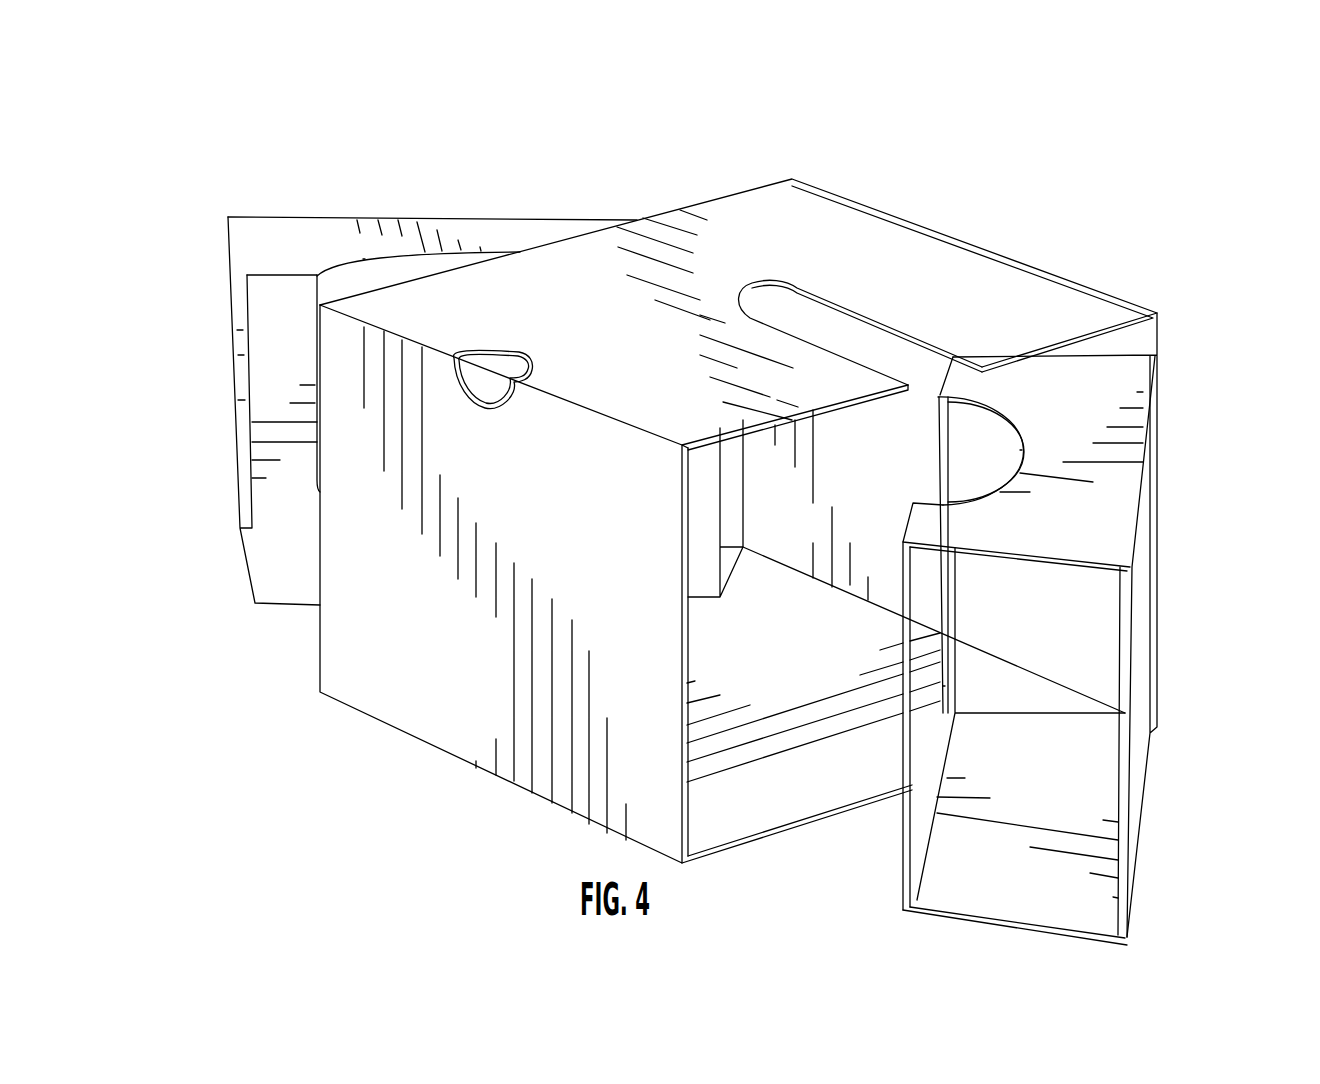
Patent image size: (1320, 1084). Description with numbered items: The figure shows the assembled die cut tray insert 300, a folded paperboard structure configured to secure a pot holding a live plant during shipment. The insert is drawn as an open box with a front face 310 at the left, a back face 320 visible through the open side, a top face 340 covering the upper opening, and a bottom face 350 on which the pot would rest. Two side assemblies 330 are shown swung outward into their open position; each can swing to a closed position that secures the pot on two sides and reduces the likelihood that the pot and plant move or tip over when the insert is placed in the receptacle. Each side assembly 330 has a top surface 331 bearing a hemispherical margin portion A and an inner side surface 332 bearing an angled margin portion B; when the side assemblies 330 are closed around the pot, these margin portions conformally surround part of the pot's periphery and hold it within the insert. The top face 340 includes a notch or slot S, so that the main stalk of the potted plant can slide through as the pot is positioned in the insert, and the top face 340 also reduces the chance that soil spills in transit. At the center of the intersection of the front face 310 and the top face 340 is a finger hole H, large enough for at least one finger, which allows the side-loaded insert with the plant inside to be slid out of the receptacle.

The die cut tray insert 300 is at (243, 92).
The front face 310 is at (627, 545).
The back face 320 is at (916, 472).
The side assemblies 330 is at (230, 312).
The top surface 331 is at (298, 261).
The inner side surface 332 is at (298, 344).
The top face 340 is at (613, 356).
The bottom face 350 is at (803, 637).
The slot S is at (849, 324).
The finger hole H is at (495, 386).
The hemispherical margin portions A is at (412, 250).
The angled margin portions B is at (327, 286).